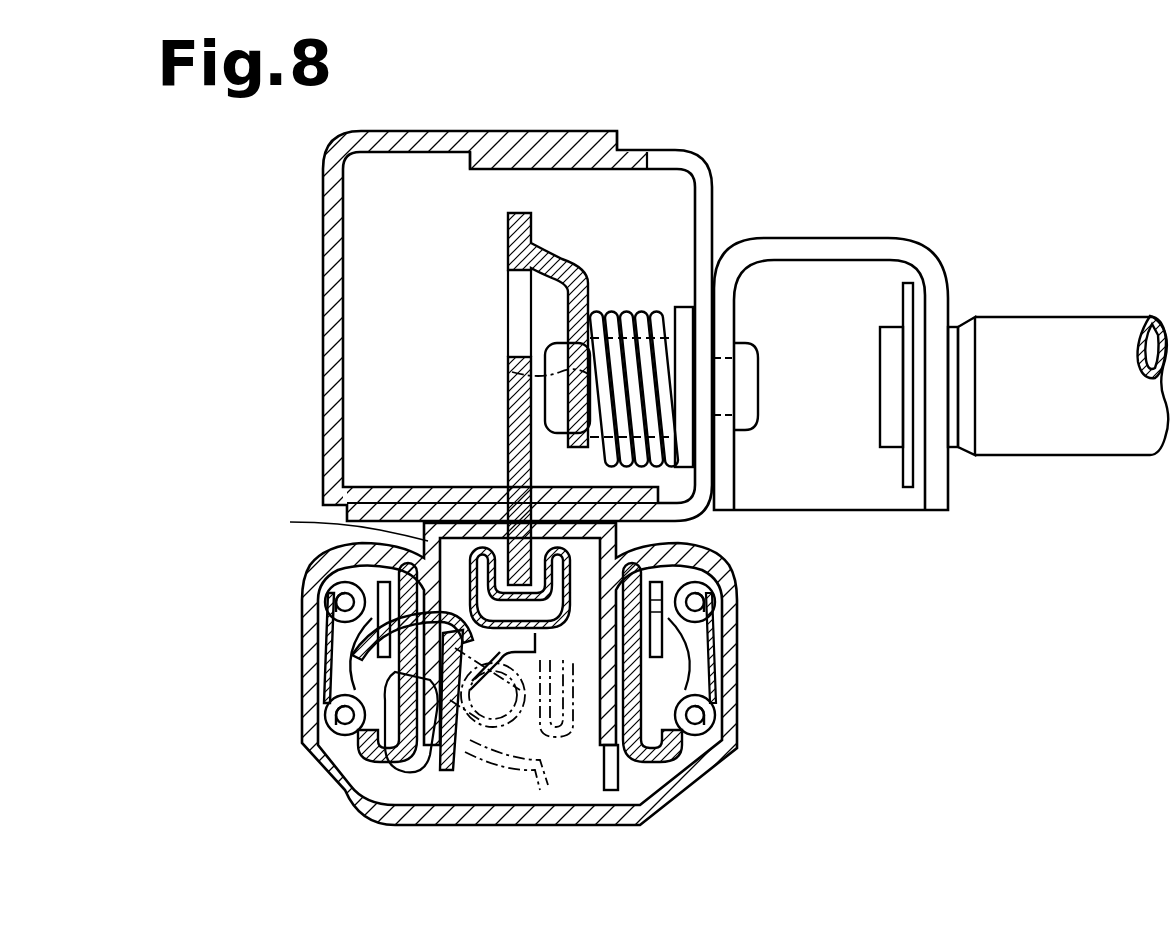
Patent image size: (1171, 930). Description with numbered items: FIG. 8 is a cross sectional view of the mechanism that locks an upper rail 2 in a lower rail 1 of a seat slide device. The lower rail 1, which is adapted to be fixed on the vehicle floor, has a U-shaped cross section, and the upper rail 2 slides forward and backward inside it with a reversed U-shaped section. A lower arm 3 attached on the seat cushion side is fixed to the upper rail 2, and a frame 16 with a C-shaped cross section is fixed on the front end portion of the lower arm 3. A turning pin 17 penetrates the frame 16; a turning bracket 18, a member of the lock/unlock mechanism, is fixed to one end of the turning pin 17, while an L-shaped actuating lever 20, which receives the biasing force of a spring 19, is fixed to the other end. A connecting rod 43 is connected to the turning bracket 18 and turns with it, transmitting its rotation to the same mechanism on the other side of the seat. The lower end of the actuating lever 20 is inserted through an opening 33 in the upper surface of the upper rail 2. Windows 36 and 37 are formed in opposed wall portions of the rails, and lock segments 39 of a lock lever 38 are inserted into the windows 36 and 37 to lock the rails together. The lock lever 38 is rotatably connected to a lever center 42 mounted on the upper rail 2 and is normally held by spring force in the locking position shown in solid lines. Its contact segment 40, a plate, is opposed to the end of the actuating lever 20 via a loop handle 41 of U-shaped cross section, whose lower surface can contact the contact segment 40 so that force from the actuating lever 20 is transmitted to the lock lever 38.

The lower rail 1 is at (310, 727).
The upper rail 2 is at (612, 790).
The lower arm 3 is at (323, 225).
The frame 16 is at (710, 173).
The turning pin 17 is at (755, 418).
The turning bracket 18 is at (880, 243).
The spring 19 is at (637, 312).
The actuating lever 20 is at (507, 302).
The opening 33 is at (493, 488).
The window 36 is at (335, 520).
The window 37 is at (355, 695).
The lock lever 38 is at (458, 762).
The lock segment 39 is at (430, 610).
The contact segment 40 is at (500, 633).
The loop handle 41 is at (573, 573).
The lever center 42 is at (407, 738).
The connecting rod 43 is at (1050, 323).